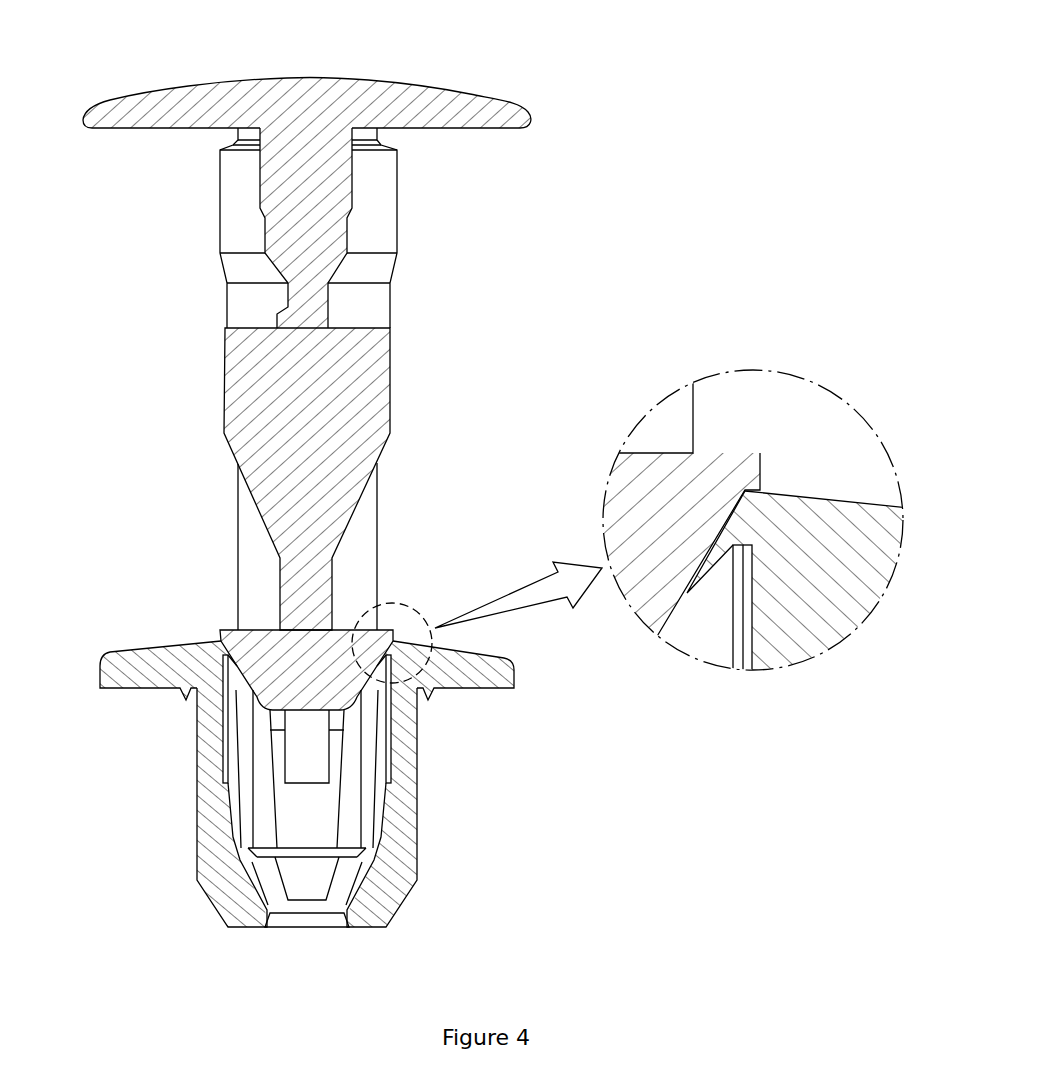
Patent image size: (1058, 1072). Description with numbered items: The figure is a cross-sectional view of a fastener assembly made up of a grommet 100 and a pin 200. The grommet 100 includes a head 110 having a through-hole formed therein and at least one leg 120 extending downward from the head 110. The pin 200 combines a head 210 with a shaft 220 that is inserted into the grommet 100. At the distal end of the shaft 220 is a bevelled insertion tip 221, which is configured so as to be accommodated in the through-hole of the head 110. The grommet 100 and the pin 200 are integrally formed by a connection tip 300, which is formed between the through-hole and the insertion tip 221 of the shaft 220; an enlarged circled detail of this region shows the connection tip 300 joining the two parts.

The grommet 100 is at (339, 804).
The head 110 is at (488, 690).
The leg 120 is at (418, 806).
The pin 200 is at (300, 363).
The head 210 is at (490, 100).
The shaft 220 is at (386, 375).
The insertion tip 221 is at (258, 630).
The connection tip 300 is at (720, 538).